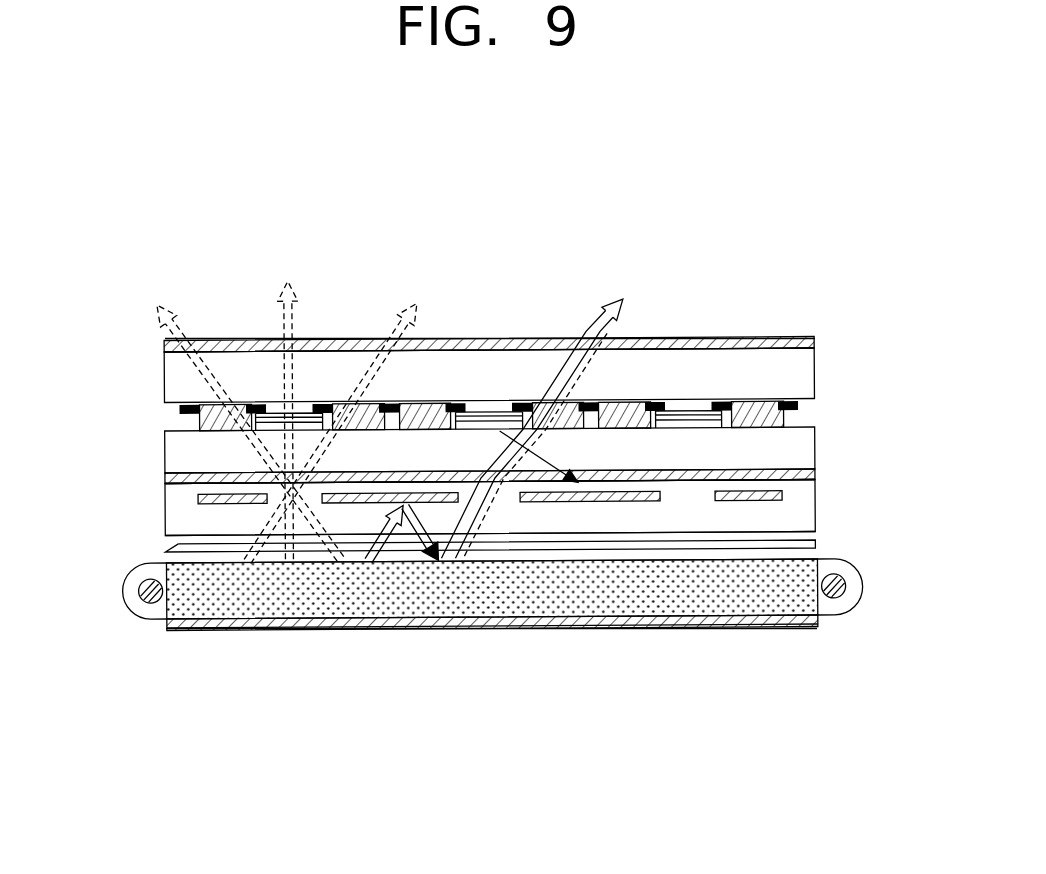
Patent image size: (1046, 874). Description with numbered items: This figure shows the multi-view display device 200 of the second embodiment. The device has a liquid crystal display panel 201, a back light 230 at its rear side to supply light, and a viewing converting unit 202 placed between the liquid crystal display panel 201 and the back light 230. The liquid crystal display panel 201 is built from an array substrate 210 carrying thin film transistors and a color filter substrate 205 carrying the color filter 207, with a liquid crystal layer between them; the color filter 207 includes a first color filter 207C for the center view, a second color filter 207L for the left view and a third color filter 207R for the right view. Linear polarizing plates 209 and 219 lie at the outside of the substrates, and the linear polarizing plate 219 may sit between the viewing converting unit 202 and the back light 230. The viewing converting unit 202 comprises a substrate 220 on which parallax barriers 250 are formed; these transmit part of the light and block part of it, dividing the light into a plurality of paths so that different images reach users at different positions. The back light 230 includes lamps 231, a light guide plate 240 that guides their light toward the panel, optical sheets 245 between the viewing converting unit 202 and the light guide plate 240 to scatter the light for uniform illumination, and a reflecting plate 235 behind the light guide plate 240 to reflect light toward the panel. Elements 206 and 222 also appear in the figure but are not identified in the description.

The display device 200 is at (825, 323).
The liquid crystal display panel 201 is at (825, 352).
The viewing converting unit 202 is at (825, 486).
The color filter substrate 205 is at (170, 378).
The black matrix and color filter layer 206 is at (178, 408).
The color filter 207 is at (378, 216).
The third color filter 207R is at (226, 403).
The first color filter 207C is at (284, 400).
The second color filter 207L is at (359, 403).
The linear polarizing plate 209 is at (163, 345).
The array substrate 210 is at (170, 441).
The linear polarizing plate 219 is at (170, 476).
The substrate 220 is at (170, 524).
The reflective patterns 222 is at (185, 497).
The back light 230 is at (871, 543).
The lamps 231 is at (140, 592).
The reflecting plate 235 is at (710, 629).
The light guide plate 240 is at (795, 612).
The optical sheets 245 is at (165, 550).
The parallax barriers 250 is at (598, 502).